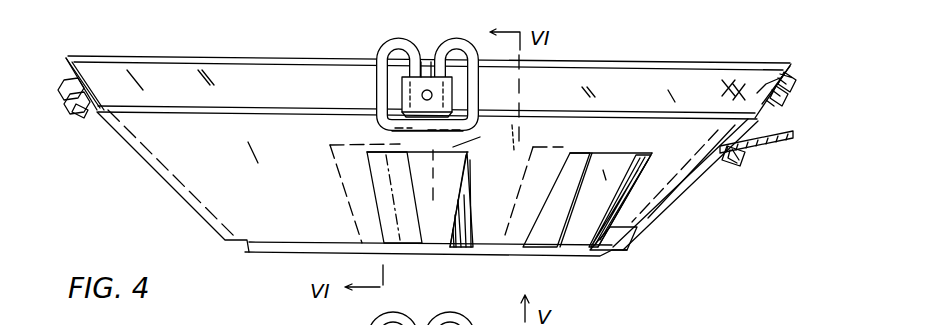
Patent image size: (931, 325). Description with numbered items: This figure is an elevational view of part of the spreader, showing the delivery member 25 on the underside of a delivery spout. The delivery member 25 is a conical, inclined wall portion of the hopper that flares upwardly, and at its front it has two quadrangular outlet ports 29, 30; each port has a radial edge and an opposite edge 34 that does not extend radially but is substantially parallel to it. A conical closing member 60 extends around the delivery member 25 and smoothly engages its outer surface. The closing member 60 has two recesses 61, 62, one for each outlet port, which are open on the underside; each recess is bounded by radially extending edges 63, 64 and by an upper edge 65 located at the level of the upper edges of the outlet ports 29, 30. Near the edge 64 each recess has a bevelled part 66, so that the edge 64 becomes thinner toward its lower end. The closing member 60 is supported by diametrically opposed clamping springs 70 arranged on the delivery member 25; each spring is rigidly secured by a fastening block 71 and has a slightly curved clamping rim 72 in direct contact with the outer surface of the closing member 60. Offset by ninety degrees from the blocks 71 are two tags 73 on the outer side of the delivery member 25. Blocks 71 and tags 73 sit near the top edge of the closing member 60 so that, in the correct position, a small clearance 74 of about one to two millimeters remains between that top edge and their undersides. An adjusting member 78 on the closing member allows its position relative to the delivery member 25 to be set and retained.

The delivery member 25 is at (258, 62).
The outlet port 29 is at (409, 228).
The outlet port 30 is at (554, 232).
The edge 34 is at (410, 186).
The closing member 60 is at (173, 192).
The recess 61 is at (462, 160).
The recess 62 is at (623, 163).
The edge 63 is at (373, 180).
The edge 64 is at (462, 212).
The upper edge 65 is at (453, 147).
The bevelled part 66 is at (470, 198).
The clamping spring 70 is at (386, 86).
The fastening block 71 is at (426, 62).
The clamping rim 72 is at (385, 128).
The tag 73 is at (97, 108).
The clearance 74 is at (736, 101).
The adjusting member 78 is at (778, 140).